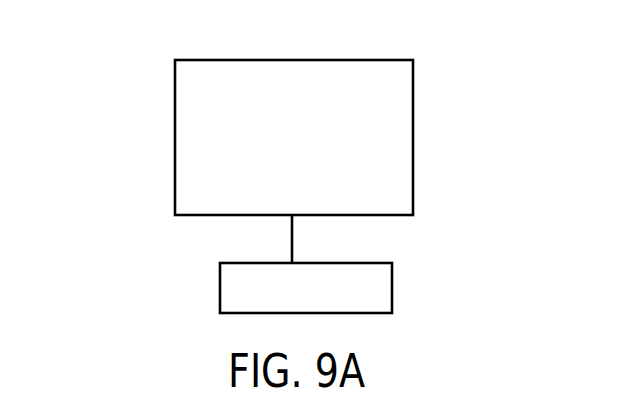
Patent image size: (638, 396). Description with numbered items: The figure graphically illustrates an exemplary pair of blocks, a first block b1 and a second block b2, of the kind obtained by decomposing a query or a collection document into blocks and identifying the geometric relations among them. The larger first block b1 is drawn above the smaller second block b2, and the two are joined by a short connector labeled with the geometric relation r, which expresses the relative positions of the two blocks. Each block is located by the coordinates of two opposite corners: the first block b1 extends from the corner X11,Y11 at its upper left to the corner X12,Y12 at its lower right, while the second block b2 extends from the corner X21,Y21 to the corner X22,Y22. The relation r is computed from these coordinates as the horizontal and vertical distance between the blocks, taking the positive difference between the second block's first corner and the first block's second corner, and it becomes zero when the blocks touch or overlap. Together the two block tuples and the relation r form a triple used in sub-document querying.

The first block b1 is at (294, 137).
The second block b2 is at (306, 288).
The geometric relation r is at (300, 239).
The first corner coordinates of first block X11,Y11 is at (166, 59).
The second corner coordinates of first block X12,Y12 is at (428, 219).
The first corner coordinates of second block X21,Y21 is at (210, 260).
The second corner coordinates of second block X22,Y22 is at (400, 334).